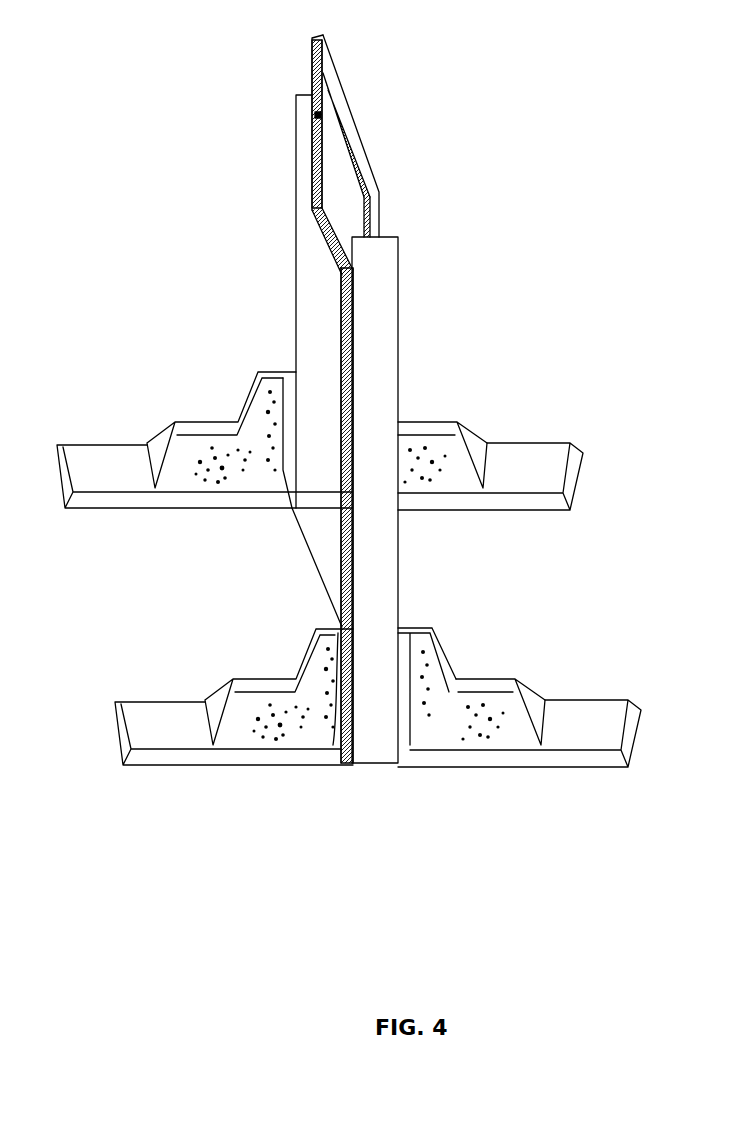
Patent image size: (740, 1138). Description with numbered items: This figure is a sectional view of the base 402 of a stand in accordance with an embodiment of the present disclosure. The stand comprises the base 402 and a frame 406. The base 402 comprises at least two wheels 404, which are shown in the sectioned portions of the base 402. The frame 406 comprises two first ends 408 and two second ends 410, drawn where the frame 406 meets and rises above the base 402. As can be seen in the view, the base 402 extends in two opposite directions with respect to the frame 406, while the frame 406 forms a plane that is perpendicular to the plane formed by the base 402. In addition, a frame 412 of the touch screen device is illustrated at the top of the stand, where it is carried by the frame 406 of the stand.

The base 402 is at (537, 510).
The wheels 404 is at (212, 477).
The frame 406 is at (316, 293).
The first ends 408 is at (323, 490).
The second ends 410 is at (301, 108).
The frame of the touch screen device 412 is at (360, 133).